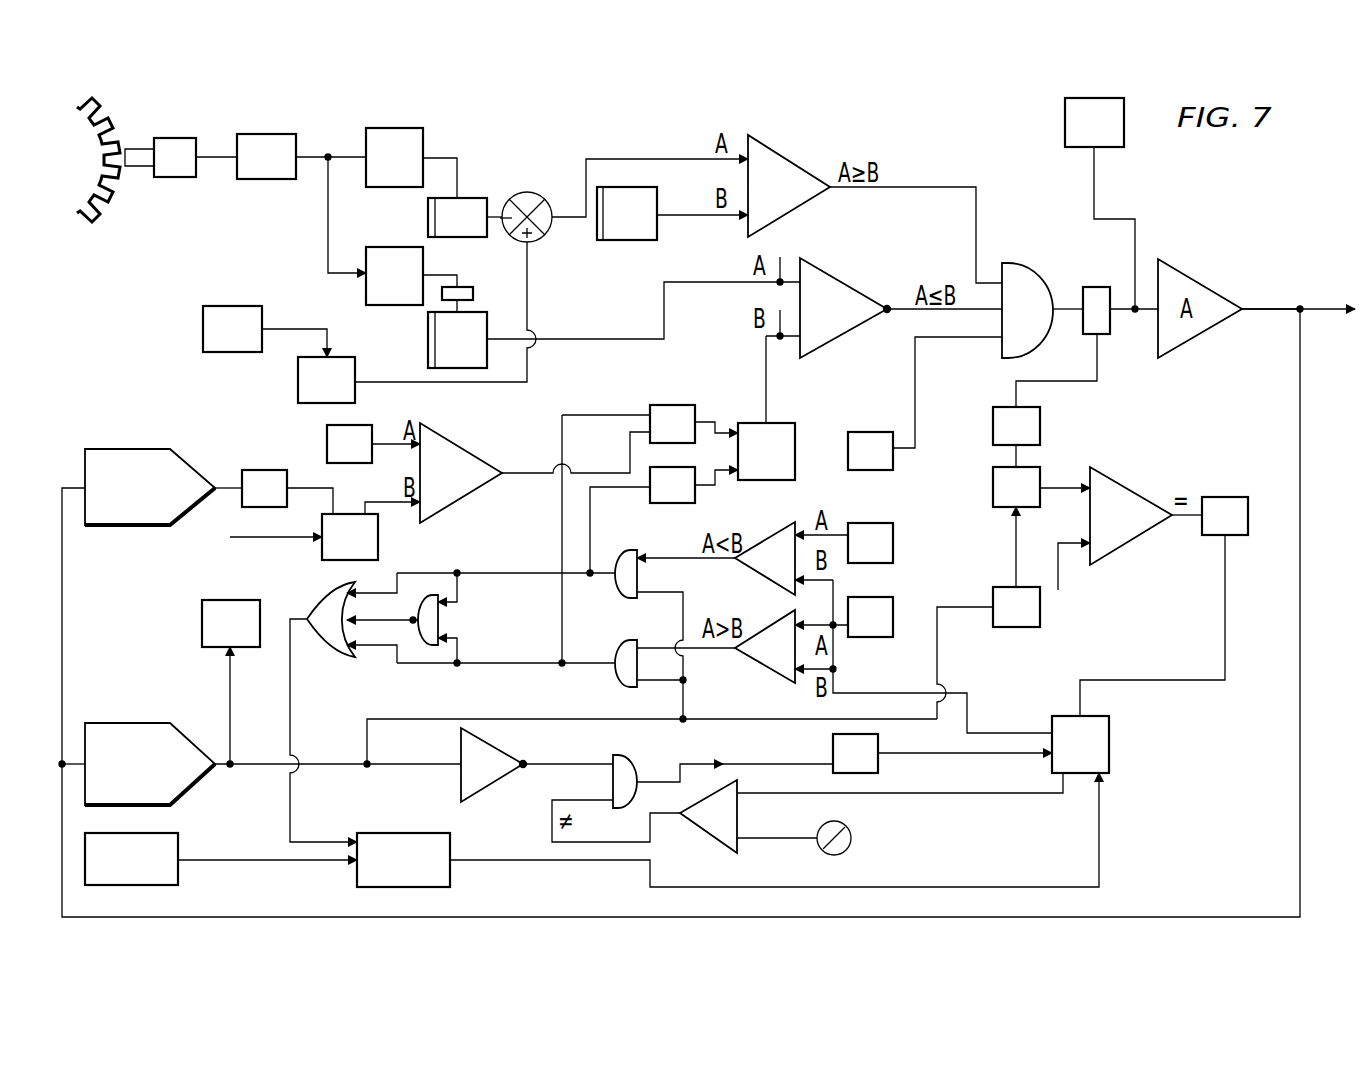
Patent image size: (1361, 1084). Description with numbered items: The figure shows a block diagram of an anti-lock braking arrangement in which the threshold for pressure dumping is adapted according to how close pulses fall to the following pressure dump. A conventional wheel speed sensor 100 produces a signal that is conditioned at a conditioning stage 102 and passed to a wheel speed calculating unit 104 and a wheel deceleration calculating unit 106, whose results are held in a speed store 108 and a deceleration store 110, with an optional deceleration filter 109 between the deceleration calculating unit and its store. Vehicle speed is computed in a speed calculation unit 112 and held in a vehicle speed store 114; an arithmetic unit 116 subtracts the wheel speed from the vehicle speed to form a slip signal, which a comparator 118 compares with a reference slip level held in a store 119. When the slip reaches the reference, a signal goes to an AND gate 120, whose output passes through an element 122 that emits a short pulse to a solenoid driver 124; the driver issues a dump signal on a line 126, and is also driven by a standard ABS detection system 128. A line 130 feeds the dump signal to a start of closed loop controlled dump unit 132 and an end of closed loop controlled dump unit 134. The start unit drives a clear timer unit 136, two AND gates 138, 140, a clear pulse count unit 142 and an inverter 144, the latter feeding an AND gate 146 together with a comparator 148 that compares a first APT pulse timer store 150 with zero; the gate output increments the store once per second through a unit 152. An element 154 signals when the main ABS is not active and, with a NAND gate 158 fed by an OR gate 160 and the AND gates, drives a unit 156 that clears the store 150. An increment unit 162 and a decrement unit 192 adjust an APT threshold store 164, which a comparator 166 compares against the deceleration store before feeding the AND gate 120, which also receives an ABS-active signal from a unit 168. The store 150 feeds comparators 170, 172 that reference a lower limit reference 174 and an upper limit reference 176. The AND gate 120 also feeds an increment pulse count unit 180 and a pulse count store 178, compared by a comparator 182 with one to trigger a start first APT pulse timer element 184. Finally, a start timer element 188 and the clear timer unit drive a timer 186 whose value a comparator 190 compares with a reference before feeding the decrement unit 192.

The wheel speed sensor 100 is at (133, 130).
The signal conditioning stage 102 is at (262, 179).
The wheel speed calculating unit 104 is at (395, 130).
The wheel deceleration calculating unit 106 is at (402, 253).
The speed store 108 is at (472, 197).
The deceleration filter 109 is at (467, 290).
The deceleration store 110 is at (428, 345).
The speed calculation unit 112 is at (210, 332).
The vehicle speed store 114 is at (302, 385).
The arithmetic unit 116 is at (530, 192).
The comparator 118 is at (775, 160).
The store 119 is at (628, 236).
The AND gate 120 is at (1027, 272).
The element 122 is at (1097, 290).
The solenoid driver 124 is at (1210, 298).
The line 126 is at (1265, 308).
The standard ABS detection system 128 is at (1078, 127).
The line 130 is at (1300, 768).
The start of closed loop controlled dump unit 132 is at (117, 735).
The end of closed loop controlled dump unit 134 is at (117, 460).
The clear timer since end of last closed loop controlled dump unit 136 is at (217, 625).
The AND gate 138 is at (620, 673).
The AND gate 140 is at (620, 587).
The clear pulse count unit 142 is at (1033, 615).
The inverter 144 is at (480, 783).
The AND gate 146 is at (633, 768).
The comparator 148 is at (710, 833).
The first APT pulse timer store 150 is at (1105, 752).
The unit 152 is at (837, 753).
The element 154 is at (172, 853).
The unit 156 is at (405, 833).
The NAND gate 158 is at (335, 642).
The OR gate 160 is at (435, 620).
The increment unit 162 is at (655, 505).
The APT threshold store 164 is at (757, 470).
The comparator 166 is at (840, 290).
The unit 168 is at (867, 438).
The comparator 170 is at (763, 570).
The comparator 172 is at (763, 655).
The lower limit reference 174 is at (887, 543).
The upper limit reference 176 is at (875, 632).
The pulse count store 178 is at (997, 490).
The increment pulse count unit 180 is at (1033, 422).
The comparator 182 is at (1137, 503).
The start first APT pulse timer element 184 is at (1225, 503).
The timer 186 is at (327, 552).
The start timer since end of last closed loop dump element 188 is at (250, 477).
The comparator 190 is at (467, 458).
The decrement unit 192 is at (663, 410).